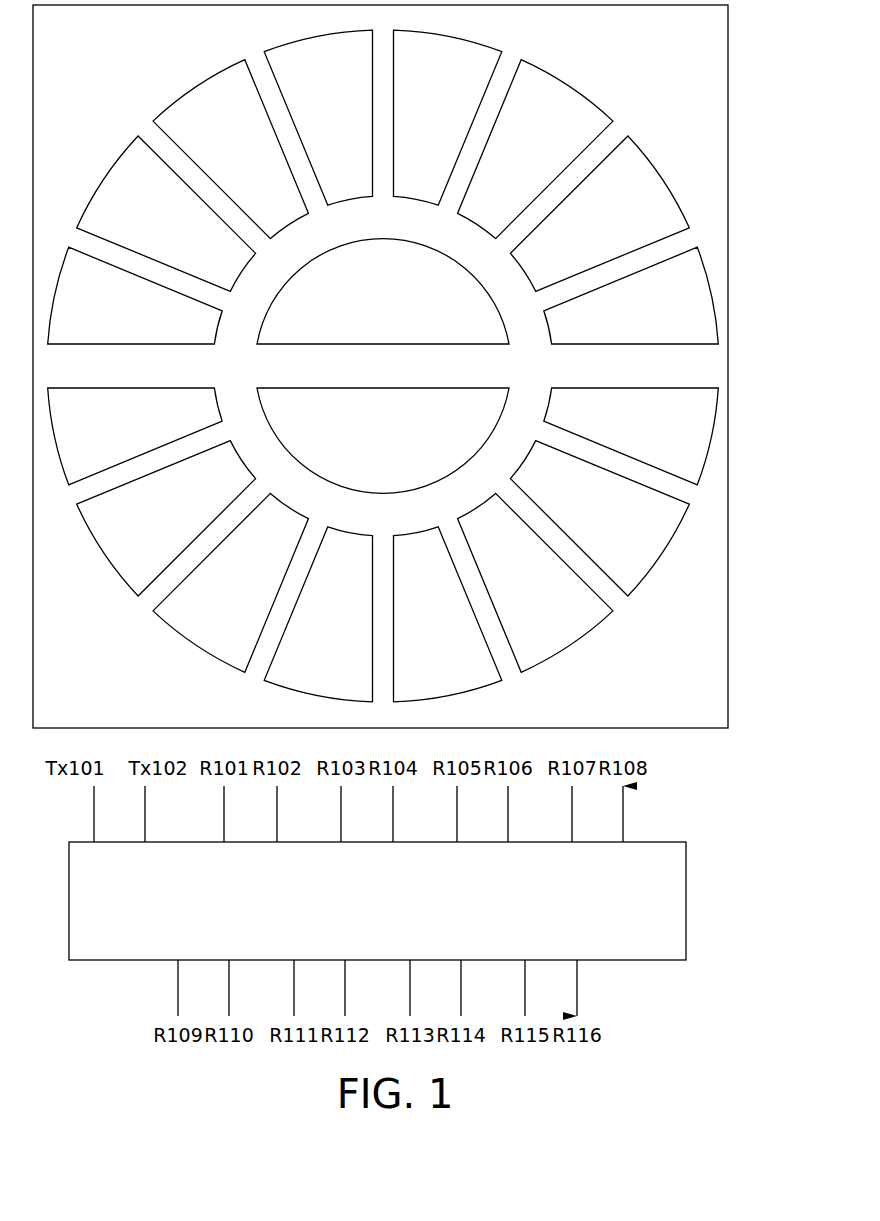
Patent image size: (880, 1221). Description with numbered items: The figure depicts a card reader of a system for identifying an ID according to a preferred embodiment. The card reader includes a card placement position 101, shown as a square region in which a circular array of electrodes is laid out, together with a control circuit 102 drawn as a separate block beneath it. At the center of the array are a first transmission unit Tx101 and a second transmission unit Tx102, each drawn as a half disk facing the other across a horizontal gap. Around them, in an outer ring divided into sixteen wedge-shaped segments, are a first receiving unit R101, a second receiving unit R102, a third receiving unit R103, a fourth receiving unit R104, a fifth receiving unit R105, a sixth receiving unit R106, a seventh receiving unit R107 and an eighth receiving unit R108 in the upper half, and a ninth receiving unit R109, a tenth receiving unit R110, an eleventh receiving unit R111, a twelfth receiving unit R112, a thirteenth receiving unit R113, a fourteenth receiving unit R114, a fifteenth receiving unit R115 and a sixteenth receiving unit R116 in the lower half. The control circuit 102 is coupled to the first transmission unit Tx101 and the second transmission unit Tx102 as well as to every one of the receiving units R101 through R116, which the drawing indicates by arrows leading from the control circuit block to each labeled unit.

The card placement position 101 is at (728, 137).
The control circuit 102 is at (686, 893).
The first transmission unit Tx101 is at (383, 291).
The second transmission unit Tx102 is at (383, 440).
The first receiving unit R101 is at (135, 295).
The second receiving unit R102 is at (166, 213).
The third receiving unit R103 is at (230, 149).
The fourth receiving unit R104 is at (318, 117).
The fifth receiving unit R105 is at (448, 117).
The sixth receiving unit R106 is at (535, 149).
The seventh receiving unit R107 is at (599, 213).
The eighth receiving unit R108 is at (631, 295).
The ninth receiving unit R109 is at (631, 436).
The tenth receiving unit R110 is at (599, 518).
The eleventh receiving unit R111 is at (535, 582).
The twelfth receiving unit R112 is at (448, 614).
The thirteenth receiving unit R113 is at (318, 614).
The fourteenth receiving unit R114 is at (230, 582).
The fifteenth receiving unit R115 is at (166, 518).
The sixteenth receiving unit R116 is at (135, 436).